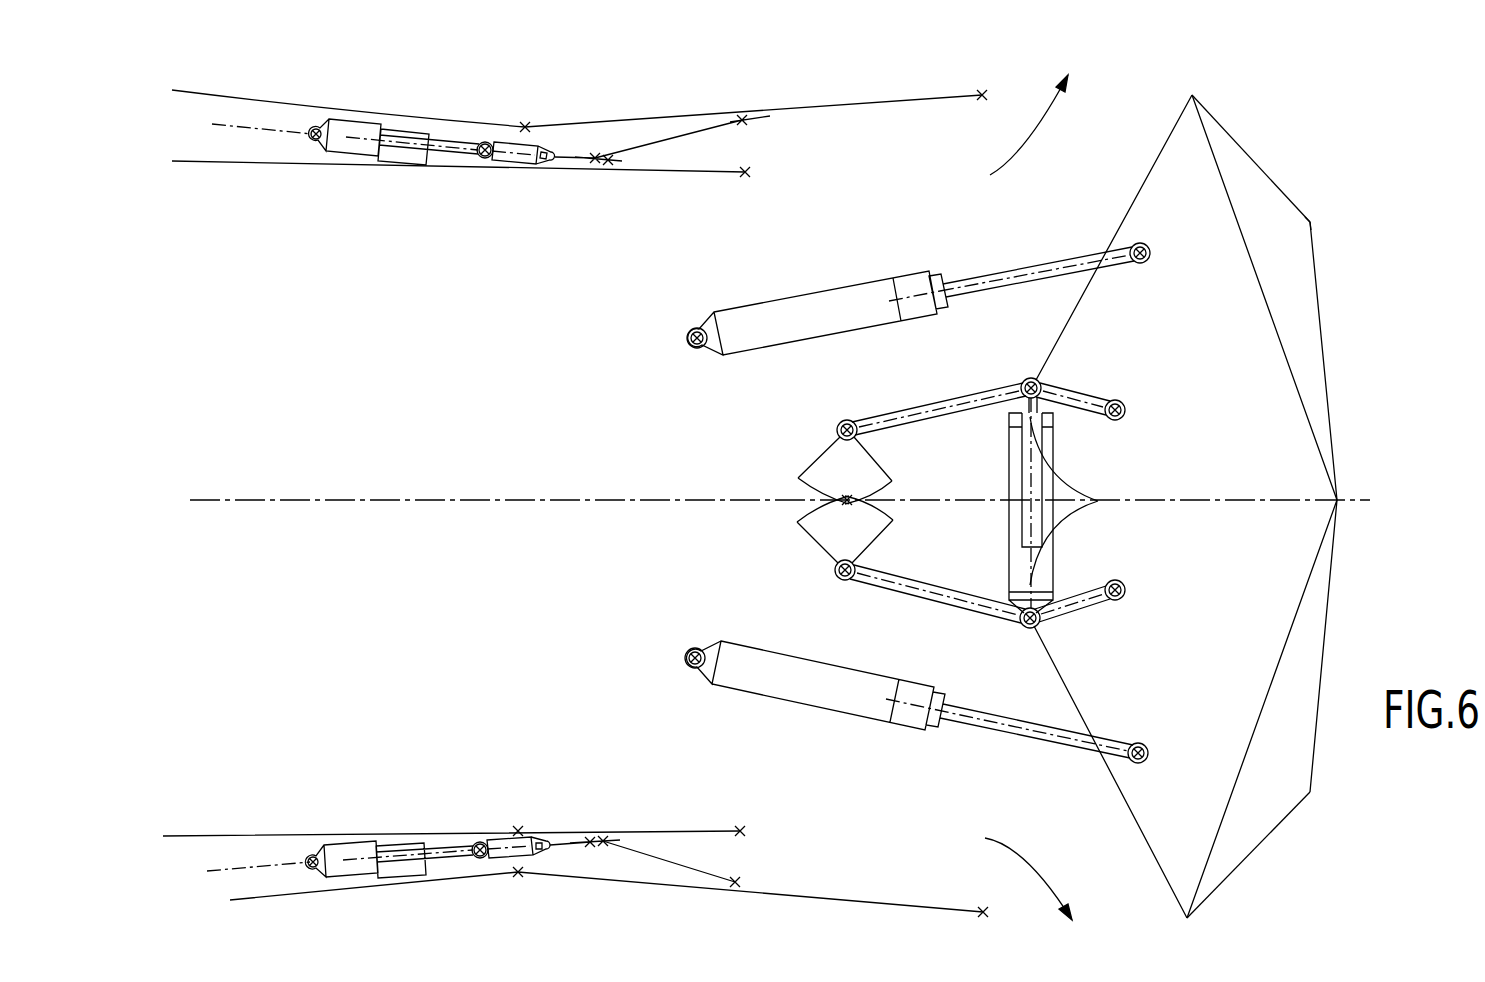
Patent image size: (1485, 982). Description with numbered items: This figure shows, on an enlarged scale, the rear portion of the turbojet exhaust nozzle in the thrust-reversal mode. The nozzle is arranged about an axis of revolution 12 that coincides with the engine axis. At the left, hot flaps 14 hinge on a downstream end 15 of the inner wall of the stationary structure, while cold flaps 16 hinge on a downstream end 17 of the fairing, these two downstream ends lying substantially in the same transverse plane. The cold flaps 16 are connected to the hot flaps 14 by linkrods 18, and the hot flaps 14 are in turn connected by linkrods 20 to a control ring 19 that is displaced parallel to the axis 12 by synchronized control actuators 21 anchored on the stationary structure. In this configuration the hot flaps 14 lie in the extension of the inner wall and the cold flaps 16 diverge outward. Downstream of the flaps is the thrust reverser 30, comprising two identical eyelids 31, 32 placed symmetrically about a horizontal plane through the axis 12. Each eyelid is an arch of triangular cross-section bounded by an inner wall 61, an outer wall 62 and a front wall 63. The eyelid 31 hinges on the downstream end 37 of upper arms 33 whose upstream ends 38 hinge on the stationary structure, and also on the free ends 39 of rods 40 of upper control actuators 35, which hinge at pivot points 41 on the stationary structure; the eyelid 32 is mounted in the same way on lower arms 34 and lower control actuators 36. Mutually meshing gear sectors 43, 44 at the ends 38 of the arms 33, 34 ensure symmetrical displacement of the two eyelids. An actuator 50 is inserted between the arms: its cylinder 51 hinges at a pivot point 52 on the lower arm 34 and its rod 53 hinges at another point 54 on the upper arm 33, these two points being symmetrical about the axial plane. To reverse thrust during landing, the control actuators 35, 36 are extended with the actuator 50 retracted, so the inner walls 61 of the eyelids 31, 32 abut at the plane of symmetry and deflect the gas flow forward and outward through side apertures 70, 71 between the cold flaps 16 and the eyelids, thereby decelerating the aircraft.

The axis of revolution 12 is at (392, 492).
The hot flaps 14 is at (575, 503).
The downstream end of the inner wall 15 is at (519, 158).
The cold flaps 16 is at (627, 119).
The downstream end of the fairing 17 is at (525, 121).
The linkrods 18 is at (692, 134).
The control ring 19 is at (484, 165).
The linkrods 20 is at (576, 150).
The control actuators 21 is at (360, 160).
The thrust reverser 30 is at (1318, 185).
The eyelid 31 is at (1298, 244).
The eyelid 32 is at (1254, 849).
The upper arms 33 is at (933, 403).
The lower arms 34 is at (915, 597).
The upper control actuators 35 is at (805, 306).
The lower control actuators 36 is at (795, 701).
The downstream end of the arms 37 is at (1126, 411).
The upstream ends of the arms 38 is at (843, 420).
The free ends of the rods 39 is at (1152, 254).
The rods 40 is at (1040, 262).
The pivot points 41 is at (687, 338).
The gear sector 43 is at (826, 454).
The gear sector 44 is at (832, 540).
The actuator 50 is at (1002, 473).
The cylinder 51 is at (1010, 568).
The pivot point 52 is at (1025, 628).
The rod 53 is at (1031, 446).
The pivot point 54 is at (1032, 378).
The inner wall 61 is at (1266, 307).
The outer wall 62 is at (1321, 323).
The front wall 63 is at (1257, 162).
The side aperture 70 is at (1121, 110).
The side aperture 71 is at (1118, 911).